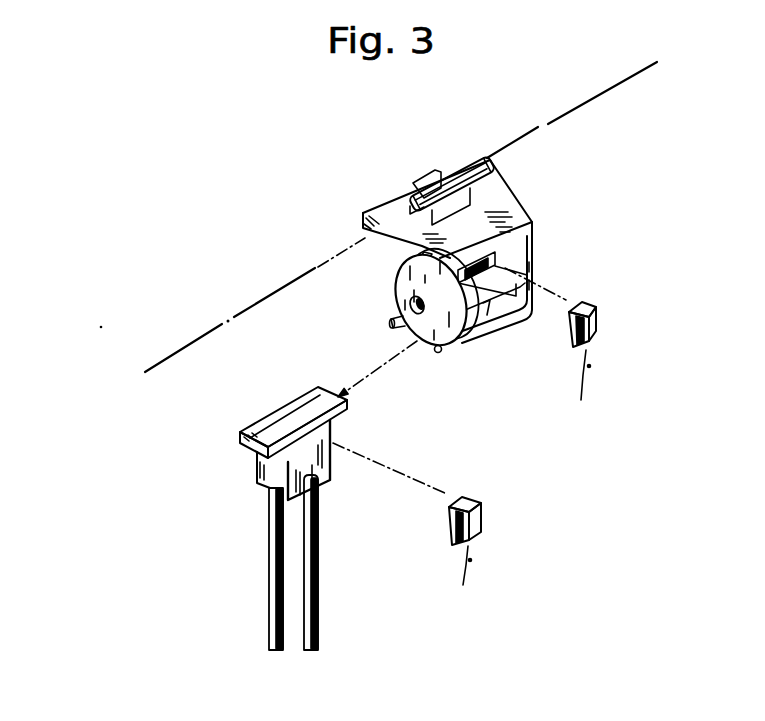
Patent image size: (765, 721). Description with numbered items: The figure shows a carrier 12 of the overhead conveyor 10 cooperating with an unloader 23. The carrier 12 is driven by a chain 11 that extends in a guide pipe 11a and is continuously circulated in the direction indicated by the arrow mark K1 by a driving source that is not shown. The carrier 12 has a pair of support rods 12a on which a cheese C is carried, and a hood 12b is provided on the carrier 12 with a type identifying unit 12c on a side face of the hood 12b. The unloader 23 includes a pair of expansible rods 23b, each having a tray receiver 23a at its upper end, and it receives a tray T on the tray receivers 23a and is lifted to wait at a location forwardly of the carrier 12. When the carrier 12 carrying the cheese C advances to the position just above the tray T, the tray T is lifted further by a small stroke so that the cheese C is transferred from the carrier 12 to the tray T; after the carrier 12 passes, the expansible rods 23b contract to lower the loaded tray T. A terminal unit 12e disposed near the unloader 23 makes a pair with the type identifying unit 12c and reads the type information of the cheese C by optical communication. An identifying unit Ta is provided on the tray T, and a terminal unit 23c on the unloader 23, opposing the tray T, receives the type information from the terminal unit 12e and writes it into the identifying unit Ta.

The overhead conveyor 10 is at (586, 169).
The chain 11 is at (519, 141).
The guide pipe 11a is at (467, 170).
The carrier 12 is at (460, 250).
The support rods 12a is at (390, 322).
The hood 12b is at (387, 210).
The type identifying unit 12c is at (505, 250).
The terminal unit 12e is at (596, 324).
The cheese C is at (436, 343).
The arrow mark K1 is at (292, 260).
The tray T is at (298, 500).
The identifying unit Ta is at (301, 413).
The unloader 23 is at (298, 535).
The tray receiver 23a is at (333, 460).
The expansible rods 23b is at (268, 578).
The terminal unit 23c is at (482, 518).